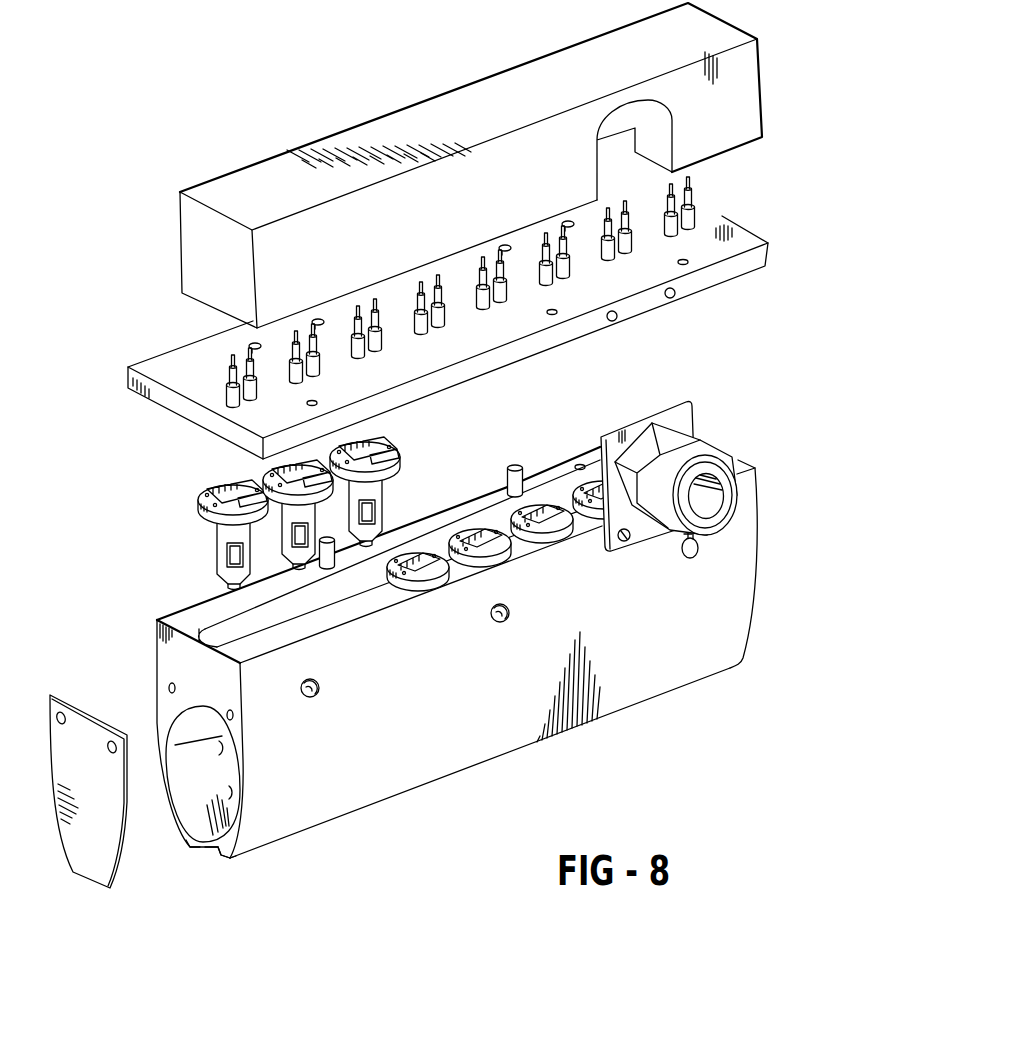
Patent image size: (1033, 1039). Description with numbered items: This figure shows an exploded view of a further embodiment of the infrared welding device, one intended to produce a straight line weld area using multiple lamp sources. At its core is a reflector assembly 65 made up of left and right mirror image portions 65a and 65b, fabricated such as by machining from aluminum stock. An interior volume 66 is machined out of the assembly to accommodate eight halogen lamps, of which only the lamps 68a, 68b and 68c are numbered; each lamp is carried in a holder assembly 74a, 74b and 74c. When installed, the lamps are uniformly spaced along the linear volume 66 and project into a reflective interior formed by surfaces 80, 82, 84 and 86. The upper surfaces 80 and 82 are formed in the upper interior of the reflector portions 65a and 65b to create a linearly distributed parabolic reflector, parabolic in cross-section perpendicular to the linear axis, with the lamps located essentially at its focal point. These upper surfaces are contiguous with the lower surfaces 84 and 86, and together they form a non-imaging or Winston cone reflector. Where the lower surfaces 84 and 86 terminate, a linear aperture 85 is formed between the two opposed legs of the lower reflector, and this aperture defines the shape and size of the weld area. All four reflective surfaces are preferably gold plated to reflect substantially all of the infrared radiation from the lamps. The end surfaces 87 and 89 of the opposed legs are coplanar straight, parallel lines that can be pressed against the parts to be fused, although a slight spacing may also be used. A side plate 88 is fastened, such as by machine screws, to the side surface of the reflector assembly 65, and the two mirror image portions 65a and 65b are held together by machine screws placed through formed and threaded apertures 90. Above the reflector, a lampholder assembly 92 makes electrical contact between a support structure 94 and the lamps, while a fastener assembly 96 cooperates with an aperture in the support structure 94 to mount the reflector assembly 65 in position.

The support structure 94 is at (483, 85).
The lampholder assembly 92 is at (723, 217).
The interior volume 66 is at (560, 470).
The fastener assembly 96 is at (704, 457).
The holder assembly 74a is at (200, 502).
The holder assembly 74b is at (258, 474).
The holder assembly 74c is at (396, 447).
The halogen lamp 68a is at (216, 577).
The halogen lamp 68b is at (286, 540).
The halogen lamp 68c is at (382, 508).
The reflector assembly 65 is at (158, 657).
The left reflector assembly portion 65a is at (167, 703).
The right reflector assembly portion 65b is at (358, 753).
The side plate 88 is at (86, 732).
The upper reflective surface 80 is at (183, 735).
The upper reflective surface 82 is at (223, 752).
The lower reflective surface 84 is at (193, 800).
The lower reflective surface 86 is at (240, 798).
The end surface 87 is at (192, 848).
The linear aperture 85 is at (210, 852).
The end surface 89 is at (218, 860).
The threaded aperture 90 is at (507, 623).